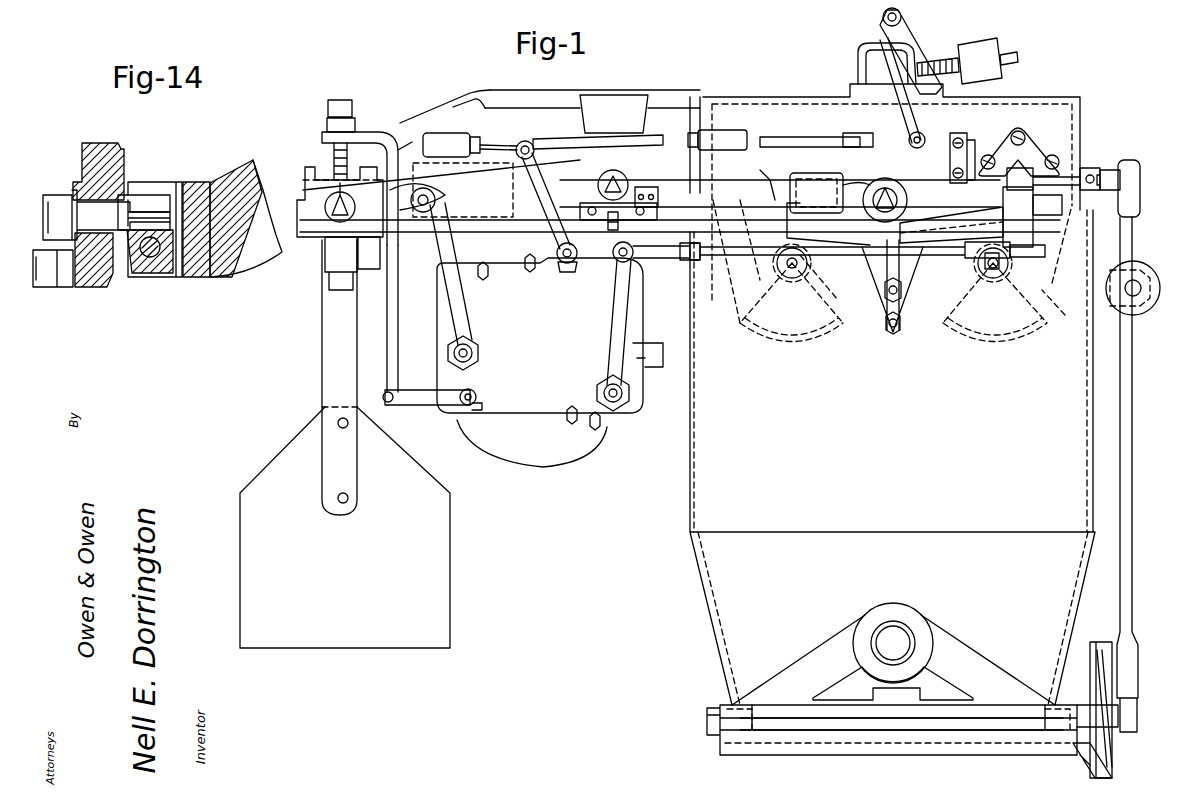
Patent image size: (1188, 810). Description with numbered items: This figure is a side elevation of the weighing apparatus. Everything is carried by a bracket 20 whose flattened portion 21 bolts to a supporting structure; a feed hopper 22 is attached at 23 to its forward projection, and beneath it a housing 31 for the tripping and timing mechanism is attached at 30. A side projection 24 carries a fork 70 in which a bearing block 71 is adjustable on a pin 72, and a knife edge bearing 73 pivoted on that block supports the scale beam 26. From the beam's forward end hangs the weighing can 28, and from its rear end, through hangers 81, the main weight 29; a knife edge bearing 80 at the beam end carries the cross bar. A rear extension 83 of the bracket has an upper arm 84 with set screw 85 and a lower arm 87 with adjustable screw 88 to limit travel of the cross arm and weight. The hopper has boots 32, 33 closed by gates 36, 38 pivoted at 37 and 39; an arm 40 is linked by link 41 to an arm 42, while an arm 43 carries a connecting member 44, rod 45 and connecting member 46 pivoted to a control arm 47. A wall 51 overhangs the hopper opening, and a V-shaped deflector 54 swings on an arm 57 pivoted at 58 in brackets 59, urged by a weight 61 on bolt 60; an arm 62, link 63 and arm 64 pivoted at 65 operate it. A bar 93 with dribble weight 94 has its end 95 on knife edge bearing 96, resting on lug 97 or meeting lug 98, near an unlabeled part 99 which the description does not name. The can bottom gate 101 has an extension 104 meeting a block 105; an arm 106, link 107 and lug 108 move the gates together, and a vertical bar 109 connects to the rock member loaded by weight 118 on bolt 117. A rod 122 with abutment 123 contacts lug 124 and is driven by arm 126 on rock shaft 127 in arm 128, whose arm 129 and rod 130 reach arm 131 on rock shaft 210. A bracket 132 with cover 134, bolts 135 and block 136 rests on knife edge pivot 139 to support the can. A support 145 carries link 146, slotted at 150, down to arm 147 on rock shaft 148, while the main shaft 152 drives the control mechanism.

In FIG. 1, the bracket 20 is at (428, 118).
In FIG. 1, the flattened portion 21 is at (575, 100).
In FIG. 1, the hopper 22 is at (1082, 130).
In FIG. 1, the attachment point 23 is at (699, 97).
In FIG. 14, the projection 24 is at (238, 263).
In FIG. 14, the scale beam 26 is at (86, 287).
In FIG. 1, the scale beam 26 is at (516, 152).
In FIG. 1, the weighing can 28 is at (687, 472).
In FIG. 1, the main weight 29 is at (258, 485).
In FIG. 1, the attachment point 30 is at (628, 233).
In FIG. 1, the housing 31 is at (560, 462).
In FIG. 1, the boot 32 is at (1050, 290).
In FIG. 1, the boot 33 is at (737, 308).
In FIG. 1, the gate 36 is at (1000, 348).
In FIG. 1, the pivot 37 is at (993, 280).
In FIG. 1, the gate 38 is at (812, 350).
In FIG. 1, the pivot 39 is at (791, 280).
In FIG. 1, the arm 40 is at (1045, 216).
In FIG. 1, the link 41 is at (945, 247).
In FIG. 1, the arm 42 is at (815, 276).
In FIG. 1, the arm 43 is at (758, 238).
In FIG. 1, the connecting member 44 is at (730, 140).
In FIG. 1, the rod 45 is at (485, 140).
In FIG. 1, the connecting member 46 is at (425, 167).
In FIG. 1, the control arm 47 is at (460, 313).
In FIG. 1, the wall 51 is at (870, 132).
In FIG. 1, the V-shaped deflector 54 is at (909, 137).
In FIG. 1, the arm 57 is at (882, 40).
In FIG. 1, the pivot 58 is at (901, 15).
In FIG. 1, the brackets 59 is at (858, 52).
In FIG. 1, the screw threaded bolt 60 is at (1008, 55).
In FIG. 1, the weight 61 is at (978, 45).
In FIG. 1, the arm 62 is at (900, 110).
In FIG. 1, the link 63 is at (622, 135).
In FIG. 1, the arm 64 is at (530, 183).
In FIG. 1, the pivot 65 is at (558, 268).
In FIG. 14, the fork 70 is at (170, 181).
In FIG. 14, the bearing block 71 is at (162, 273).
In FIG. 14, the pin 72 is at (148, 258).
In FIG. 14, the knife edge bearing 73 is at (147, 195).
In FIG. 1, the knife edge bearing 73 is at (598, 175).
In FIG. 1, the knife edge bearing 80 is at (330, 215).
In FIG. 1, the hangers 81 is at (322, 338).
In FIG. 1, the rear extension 83 is at (392, 146).
In FIG. 1, the upper arm 84 is at (322, 138).
In FIG. 1, the set screw 85 is at (343, 100).
In FIG. 1, the lower arm 87 is at (366, 269).
In FIG. 1, the adjustable screw 88 is at (328, 285).
In FIG. 1, the bar 93 is at (770, 182).
In FIG. 1, the adjustable weight 94 is at (830, 180).
In FIG. 1, the end 95 is at (646, 187).
In FIG. 14, the knife edge bearing 96 is at (45, 225).
In FIG. 1, the knife edge bearing 96 is at (610, 226).
In FIG. 1, the lug 97 is at (955, 213).
In FIG. 1, the lug 98 is at (1003, 200).
In FIG. 1, the plate 99 is at (972, 150).
In FIG. 1, the gate 101 is at (975, 750).
In FIG. 1, the outward extension 104 is at (856, 733).
In FIG. 1, the block 105 is at (902, 637).
In FIG. 1, the arm 106 is at (1093, 642).
In FIG. 1, the link 107 is at (1108, 746).
In FIG. 1, the lug 108 is at (1080, 757).
In FIG. 1, the vertical bar 109 is at (1132, 487).
In FIG. 1, the threaded bolt 117 is at (1137, 296).
In FIG. 1, the adjustable weight 118 is at (1142, 262).
In FIG. 1, the rod 122 is at (1110, 170).
In FIG. 1, the abutment member 123 is at (1090, 168).
In FIG. 1, the lug 124 is at (1132, 214).
In FIG. 1, the arm 126 is at (1058, 185).
In FIG. 1, the rock shaft 127 is at (1001, 267).
In FIG. 1, the arm 128 is at (1030, 155).
In FIG. 1, the arm 129 is at (1045, 255).
In FIG. 1, the rod 130 is at (715, 258).
In FIG. 1, the arm 131 is at (632, 266).
In FIG. 1, the bracket 132 is at (905, 300).
In FIG. 1, the cover 134 is at (953, 138).
In FIG. 1, the bolts 135 is at (950, 133).
In FIG. 1, the block 136 is at (843, 193).
In FIG. 1, the knife edge pivot 139 is at (860, 237).
In FIG. 1, the knife edge pivot support 145 is at (427, 192).
In FIG. 1, the link 146 is at (398, 375).
In FIG. 1, the arm 147 is at (412, 405).
In FIG. 1, the rock shaft 148 is at (474, 392).
In FIG. 1, the elongated slot 150 is at (430, 212).
In FIG. 1, the main shaft 152 is at (655, 340).
In FIG. 1, the rock shaft 210 is at (630, 395).